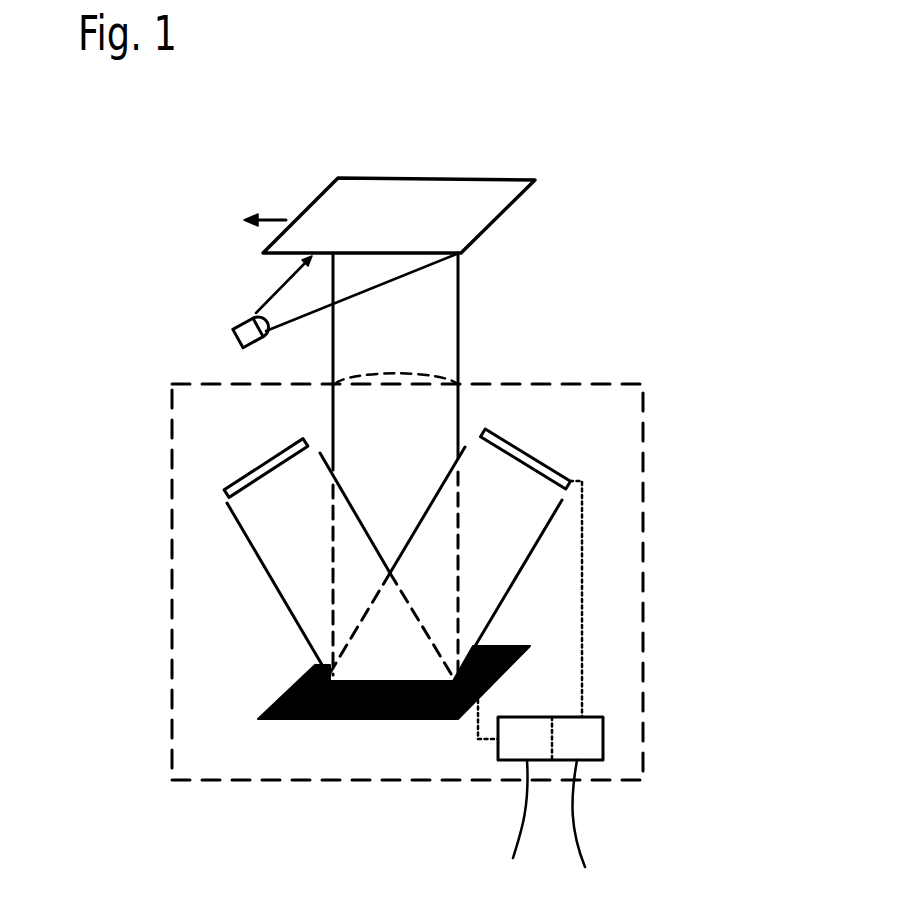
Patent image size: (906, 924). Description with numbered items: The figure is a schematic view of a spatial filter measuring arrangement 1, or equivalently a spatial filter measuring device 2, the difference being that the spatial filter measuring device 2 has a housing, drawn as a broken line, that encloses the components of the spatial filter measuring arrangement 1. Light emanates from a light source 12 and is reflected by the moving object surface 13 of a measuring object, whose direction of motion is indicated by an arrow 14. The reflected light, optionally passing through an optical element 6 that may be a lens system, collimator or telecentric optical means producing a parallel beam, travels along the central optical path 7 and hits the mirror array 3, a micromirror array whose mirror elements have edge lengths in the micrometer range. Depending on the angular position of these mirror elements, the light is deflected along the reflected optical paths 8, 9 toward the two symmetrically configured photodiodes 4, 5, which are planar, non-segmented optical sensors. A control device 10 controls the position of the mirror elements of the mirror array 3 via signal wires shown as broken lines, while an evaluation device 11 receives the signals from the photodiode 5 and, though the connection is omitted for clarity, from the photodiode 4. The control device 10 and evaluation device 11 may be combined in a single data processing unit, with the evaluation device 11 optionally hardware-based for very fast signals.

The spatial filter measuring arrangement 1 is at (686, 249).
The spatial filter measuring device 2 is at (647, 747).
The mirror array 3 is at (423, 718).
The photodiode 4 is at (250, 470).
The photodiode 5 is at (520, 450).
The optical element 6 is at (383, 382).
The central optical path 7 is at (330, 532).
The reflected optical path 8 is at (260, 569).
The reflected optical path 9 is at (518, 577).
The control device 10 is at (507, 835).
The evaluation device 11 is at (592, 841).
The light source 12 is at (235, 322).
The moving object surface 13 is at (478, 178).
The arrow 14 is at (270, 218).